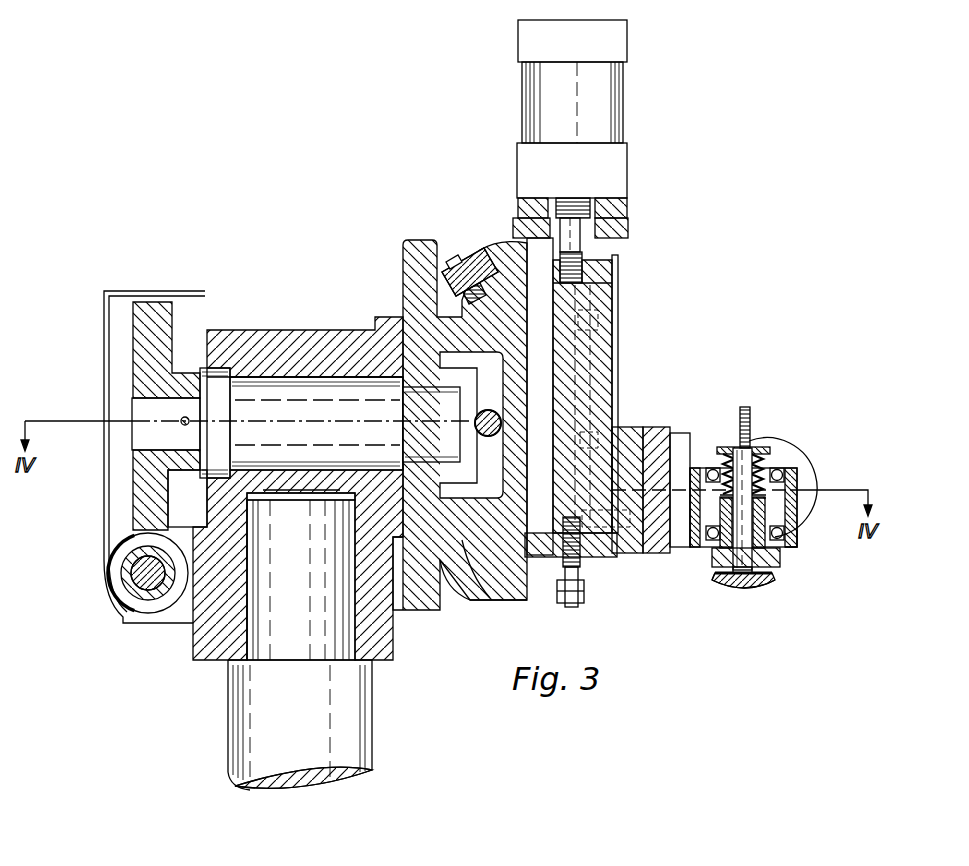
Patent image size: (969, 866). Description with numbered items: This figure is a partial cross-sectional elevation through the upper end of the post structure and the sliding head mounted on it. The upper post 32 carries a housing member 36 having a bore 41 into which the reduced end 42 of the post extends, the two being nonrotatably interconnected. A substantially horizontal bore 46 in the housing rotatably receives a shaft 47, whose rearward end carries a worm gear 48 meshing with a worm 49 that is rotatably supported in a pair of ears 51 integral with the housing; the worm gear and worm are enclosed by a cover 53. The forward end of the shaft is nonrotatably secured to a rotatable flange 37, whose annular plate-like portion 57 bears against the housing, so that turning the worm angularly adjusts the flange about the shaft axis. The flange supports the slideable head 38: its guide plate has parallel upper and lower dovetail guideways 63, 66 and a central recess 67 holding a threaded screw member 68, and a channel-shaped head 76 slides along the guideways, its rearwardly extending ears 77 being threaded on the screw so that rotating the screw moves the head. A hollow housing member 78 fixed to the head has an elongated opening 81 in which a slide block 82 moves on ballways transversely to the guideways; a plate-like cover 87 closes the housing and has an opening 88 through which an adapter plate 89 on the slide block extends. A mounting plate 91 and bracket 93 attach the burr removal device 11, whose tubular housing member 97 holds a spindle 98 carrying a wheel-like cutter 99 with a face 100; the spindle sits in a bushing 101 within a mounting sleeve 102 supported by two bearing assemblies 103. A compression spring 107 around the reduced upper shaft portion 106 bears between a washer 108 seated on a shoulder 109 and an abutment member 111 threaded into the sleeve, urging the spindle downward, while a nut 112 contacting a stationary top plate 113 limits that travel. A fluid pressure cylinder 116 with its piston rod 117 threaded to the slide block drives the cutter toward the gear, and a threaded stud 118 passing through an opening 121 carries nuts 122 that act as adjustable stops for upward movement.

The burr removal device 11 is at (753, 392).
The upper post 32 is at (240, 708).
The housing member 36 is at (287, 340).
The rotatable flange 37 is at (413, 230).
The slideable head 38 is at (485, 230).
The bore 41 is at (352, 613).
The reduced end 42 is at (255, 637).
The horizontal bore 46 is at (258, 383).
The shaft 47 is at (318, 395).
The worm gear 48 is at (153, 320).
The worm 49 is at (135, 600).
The ears 51 is at (178, 615).
The cover 53 is at (103, 323).
The annular plate-like portion 57 is at (436, 610).
The upper dovetail guideway 63 is at (480, 247).
The lower dovetail guideway 66 is at (478, 550).
The central recess 67 is at (462, 527).
The screw member 68 is at (476, 440).
The channel-shaped head 76 is at (507, 573).
The ears 77 is at (490, 409).
The hollow housing member 78 is at (548, 548).
The elongated opening 81 is at (518, 217).
The slide block 82 is at (600, 277).
The cover 87 is at (617, 312).
The opening 88 is at (628, 427).
The adapter plate 89 is at (652, 430).
The mounting plate 91 is at (664, 435).
The bracket 93 is at (698, 448).
The tubular housing member 97 is at (797, 540).
The spindle 98 is at (716, 562).
The cutter 99 is at (750, 590).
The face 100 is at (722, 588).
The bushing 101 is at (771, 580).
The mounting sleeve 102 is at (780, 560).
The bearing assemblies 103 is at (795, 492).
The reduced upper shaft portion 106 is at (770, 451).
The compression spring 107 is at (766, 470).
The washer 108 is at (767, 515).
The shoulder 109 is at (725, 456).
The abutment member 111 is at (736, 440).
The nut 112 is at (750, 425).
The top plate 113 is at (760, 446).
The fluid pressure cylinder 116 is at (605, 98).
The piston rod 117 is at (576, 214).
The threaded stud 118 is at (582, 575).
The opening 121 is at (584, 548).
The nuts 122 is at (580, 604).